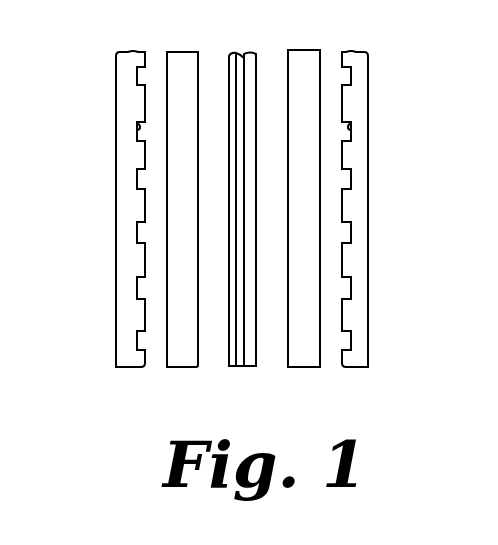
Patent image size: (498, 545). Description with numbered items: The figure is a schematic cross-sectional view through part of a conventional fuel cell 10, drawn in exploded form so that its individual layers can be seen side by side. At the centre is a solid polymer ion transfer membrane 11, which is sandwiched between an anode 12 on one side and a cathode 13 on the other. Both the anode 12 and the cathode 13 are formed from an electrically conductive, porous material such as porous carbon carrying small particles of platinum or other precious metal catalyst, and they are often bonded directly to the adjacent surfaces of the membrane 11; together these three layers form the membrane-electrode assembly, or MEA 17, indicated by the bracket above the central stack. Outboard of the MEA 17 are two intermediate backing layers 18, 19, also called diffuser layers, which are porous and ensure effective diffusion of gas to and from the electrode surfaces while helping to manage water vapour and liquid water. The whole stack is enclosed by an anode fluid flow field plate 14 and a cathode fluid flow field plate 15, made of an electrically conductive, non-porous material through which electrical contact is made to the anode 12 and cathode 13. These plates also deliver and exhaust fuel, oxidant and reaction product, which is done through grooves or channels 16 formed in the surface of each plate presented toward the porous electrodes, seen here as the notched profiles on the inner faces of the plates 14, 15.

The fuel cell 10 is at (96, 44).
The solid polymer ion transfer membrane 11 is at (238, 357).
The anode 12 is at (230, 353).
The cathode 13 is at (248, 342).
The anode fluid flow field plate 14 is at (127, 355).
The cathode fluid flow field plate 15 is at (353, 353).
The channels 16 is at (139, 130).
The membrane-electrode assembly 17 is at (265, 42).
The backing layer 18 is at (180, 68).
The backing layer 19 is at (306, 77).